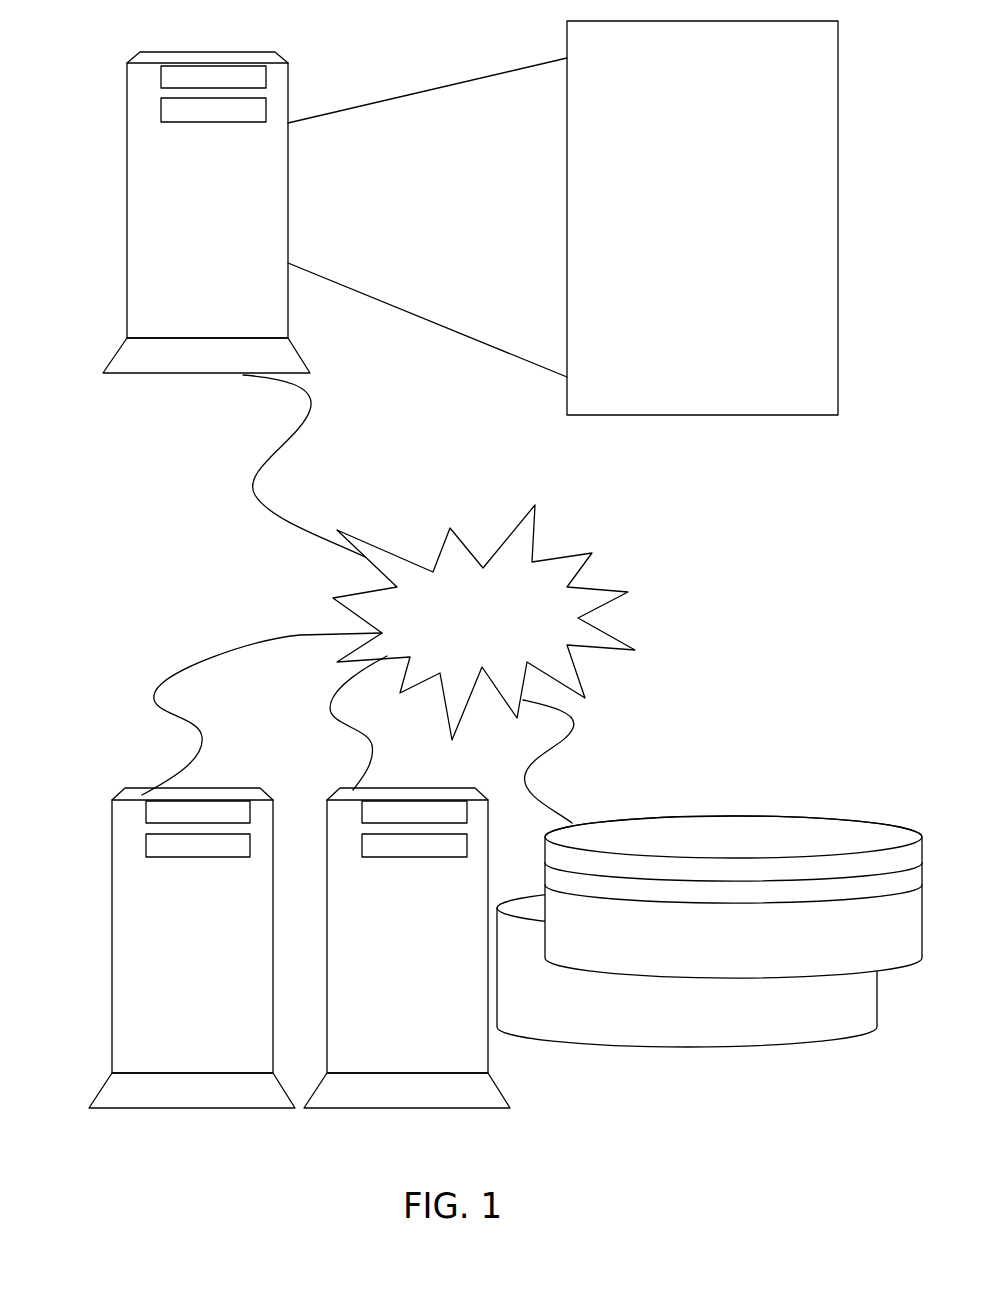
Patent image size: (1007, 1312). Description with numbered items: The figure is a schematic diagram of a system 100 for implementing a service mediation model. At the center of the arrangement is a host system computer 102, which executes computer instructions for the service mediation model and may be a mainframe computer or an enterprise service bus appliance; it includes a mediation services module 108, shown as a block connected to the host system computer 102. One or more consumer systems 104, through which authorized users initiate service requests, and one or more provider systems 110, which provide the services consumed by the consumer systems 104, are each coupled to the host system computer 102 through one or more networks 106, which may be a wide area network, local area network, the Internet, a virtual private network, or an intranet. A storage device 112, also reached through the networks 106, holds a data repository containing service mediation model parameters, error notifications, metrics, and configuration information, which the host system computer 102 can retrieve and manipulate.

The system 100 is at (478, 594).
The host system computer 102 is at (127, 95).
The consumer systems 104 is at (112, 830).
The networks 106 is at (595, 588).
The mediation services module 108 is at (840, 92).
The provider systems 110 is at (331, 790).
The storage device 112 is at (810, 817).